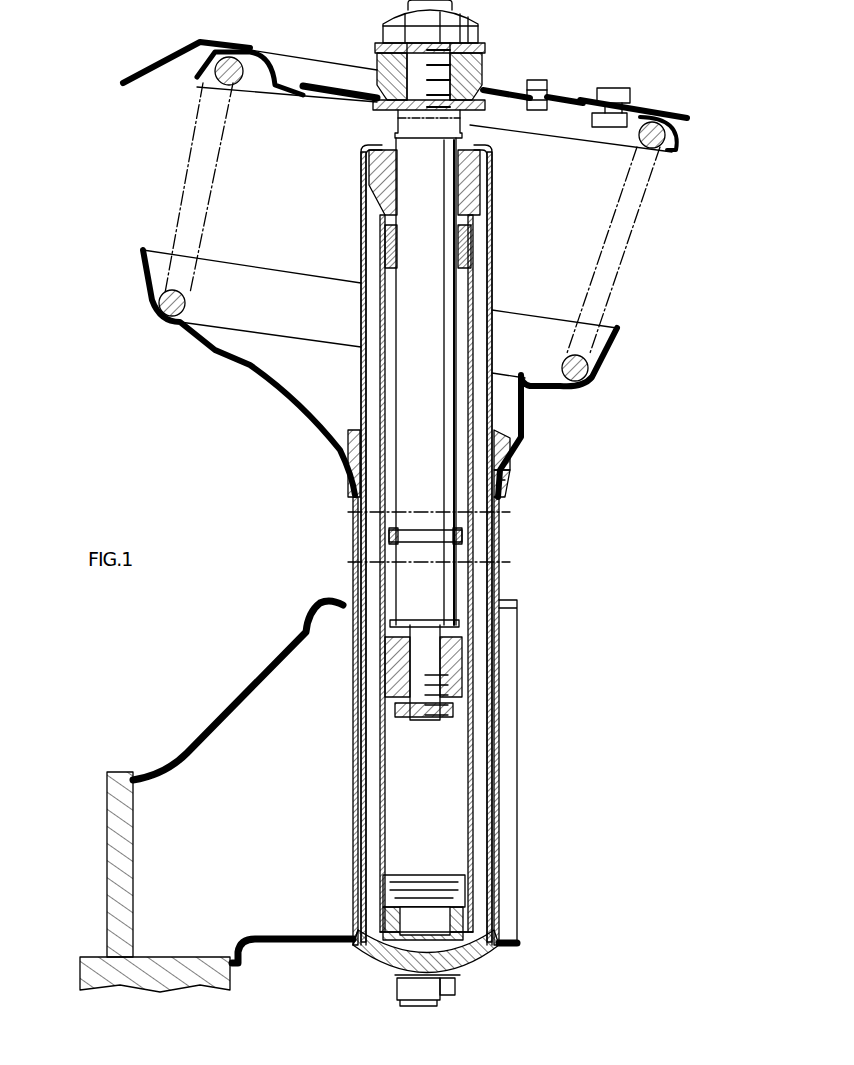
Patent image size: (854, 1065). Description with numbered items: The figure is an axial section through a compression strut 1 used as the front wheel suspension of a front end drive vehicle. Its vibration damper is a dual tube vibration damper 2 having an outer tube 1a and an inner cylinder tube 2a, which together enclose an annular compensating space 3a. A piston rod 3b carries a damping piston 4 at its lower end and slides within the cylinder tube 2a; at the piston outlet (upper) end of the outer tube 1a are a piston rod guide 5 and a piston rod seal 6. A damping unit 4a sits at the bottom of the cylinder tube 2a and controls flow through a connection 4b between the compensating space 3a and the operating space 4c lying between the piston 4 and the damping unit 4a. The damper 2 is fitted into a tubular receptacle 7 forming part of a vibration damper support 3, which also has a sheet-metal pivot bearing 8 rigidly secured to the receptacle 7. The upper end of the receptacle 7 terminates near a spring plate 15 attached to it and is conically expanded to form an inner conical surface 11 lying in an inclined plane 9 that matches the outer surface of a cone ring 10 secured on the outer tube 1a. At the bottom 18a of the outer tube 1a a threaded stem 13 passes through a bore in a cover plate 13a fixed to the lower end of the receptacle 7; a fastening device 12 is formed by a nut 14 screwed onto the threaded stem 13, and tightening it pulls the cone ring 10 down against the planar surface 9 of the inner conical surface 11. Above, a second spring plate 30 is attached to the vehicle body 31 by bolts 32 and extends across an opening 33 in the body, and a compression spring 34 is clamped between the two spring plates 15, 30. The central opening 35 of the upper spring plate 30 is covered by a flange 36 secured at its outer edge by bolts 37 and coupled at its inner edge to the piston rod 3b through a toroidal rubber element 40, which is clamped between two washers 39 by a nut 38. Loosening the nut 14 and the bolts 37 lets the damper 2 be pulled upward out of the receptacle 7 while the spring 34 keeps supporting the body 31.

The compression strut 1 is at (200, 472).
The outer tube 1a is at (490, 538).
The dual tube vibration damper 2 is at (500, 262).
The cylinder tube 2a is at (475, 578).
The vibration damper support 3 is at (183, 748).
The annular compensating space 3a is at (478, 730).
The piston rod 3b is at (430, 468).
The piston 4 is at (455, 648).
The damping unit 4a is at (428, 862).
The connection 4b is at (463, 920).
The operating space 4c is at (395, 778).
The piston rod guide 5 is at (478, 188).
The piston rod seal 6 is at (378, 168).
The tubular receptacle 7 is at (500, 620).
The pivot bearing 8 is at (262, 948).
The inclined plane 9 is at (500, 460).
The cone ring 10 is at (497, 420).
The inner conical surface 11 is at (500, 480).
The fastening device 12 is at (435, 1003).
The threaded stem 13 is at (438, 968).
The cover plate 13a is at (367, 963).
The nut 14 is at (447, 988).
The spring plate 15 is at (575, 390).
The bottom 18a is at (398, 960).
The second spring plate 30 is at (200, 78).
The vehicle body 31 is at (123, 85).
The bolts 32 is at (615, 95).
The opening 33 is at (253, 50).
The compression spring 34 is at (185, 300).
The central opening 35 is at (345, 105).
The flange 36 is at (503, 95).
The bolts 37 is at (540, 80).
The nut 38 is at (470, 18).
The washers 39 is at (375, 48).
The rubber element 40 is at (480, 100).